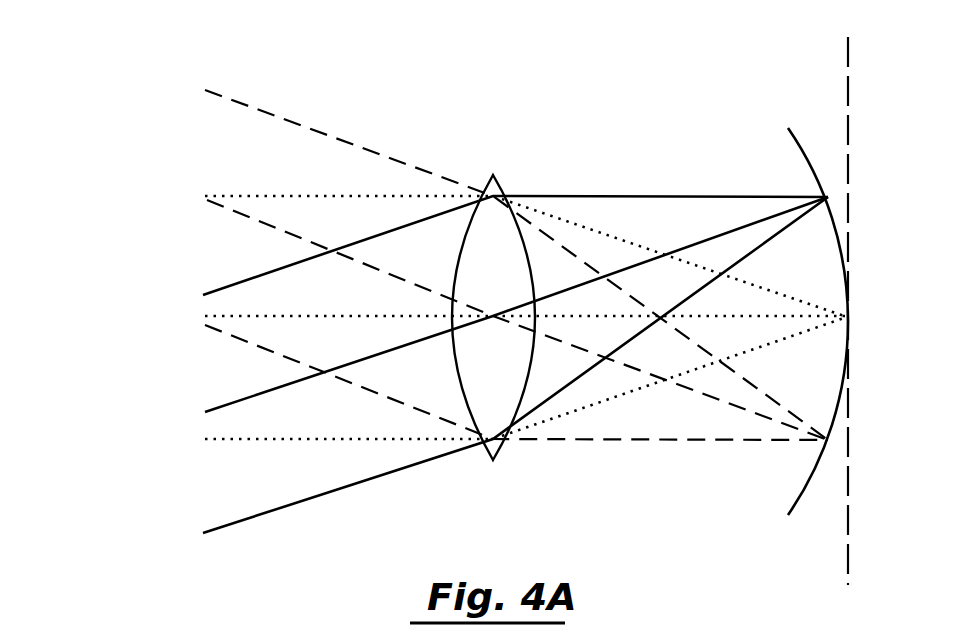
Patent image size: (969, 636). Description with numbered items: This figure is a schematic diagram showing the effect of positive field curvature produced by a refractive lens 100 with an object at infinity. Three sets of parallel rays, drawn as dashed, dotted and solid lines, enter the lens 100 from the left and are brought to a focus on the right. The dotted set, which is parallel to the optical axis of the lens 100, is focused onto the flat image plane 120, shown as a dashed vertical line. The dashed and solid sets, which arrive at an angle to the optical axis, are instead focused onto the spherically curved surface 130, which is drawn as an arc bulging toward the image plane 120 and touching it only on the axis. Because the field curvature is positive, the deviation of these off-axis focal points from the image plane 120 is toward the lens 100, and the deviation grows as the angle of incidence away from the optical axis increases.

The lens 100 is at (497, 180).
The image plane 120 is at (850, 110).
The spherically curved surface 130 is at (790, 127).